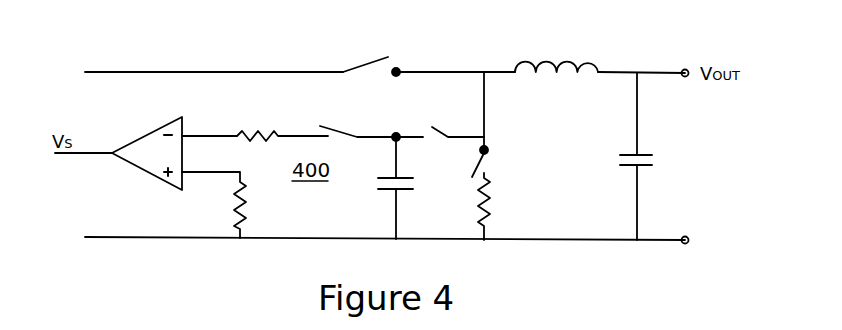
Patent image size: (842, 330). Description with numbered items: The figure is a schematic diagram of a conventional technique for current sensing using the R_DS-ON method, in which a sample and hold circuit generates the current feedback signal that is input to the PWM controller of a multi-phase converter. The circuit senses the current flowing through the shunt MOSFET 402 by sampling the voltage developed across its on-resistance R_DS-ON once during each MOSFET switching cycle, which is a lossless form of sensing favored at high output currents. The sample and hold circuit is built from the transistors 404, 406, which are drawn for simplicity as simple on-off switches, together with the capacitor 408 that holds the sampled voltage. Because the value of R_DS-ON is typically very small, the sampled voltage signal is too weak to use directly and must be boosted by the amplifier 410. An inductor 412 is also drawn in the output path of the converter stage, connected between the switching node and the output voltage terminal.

The shunt MOSFET 402 is at (495, 165).
The transistor 404 is at (435, 128).
The transistor 406 is at (327, 127).
The capacitor 408 is at (380, 189).
The amplifier 410 is at (143, 136).
The inductor 412 is at (557, 63).